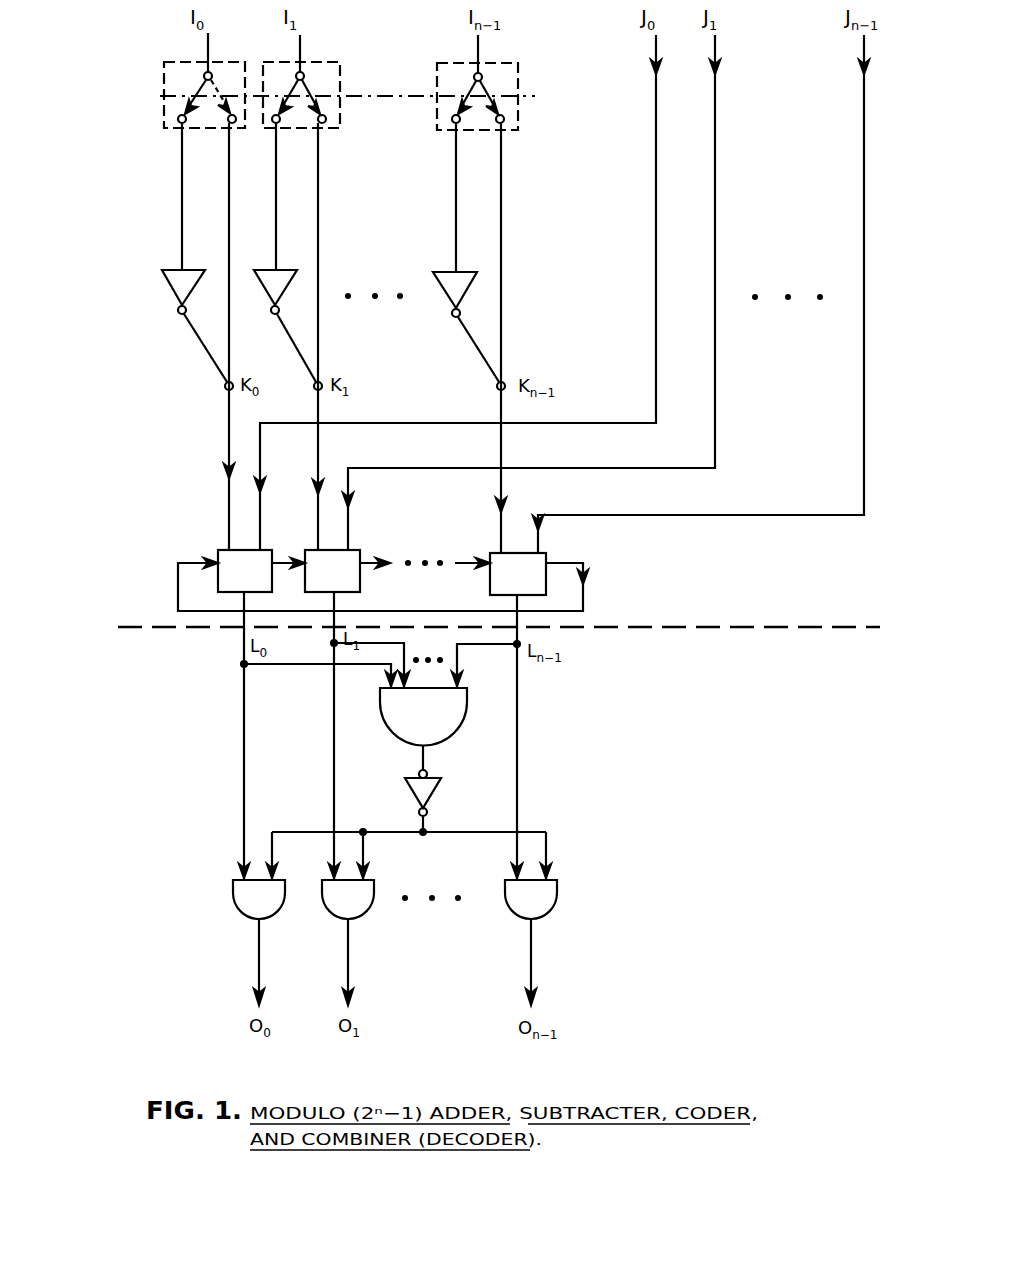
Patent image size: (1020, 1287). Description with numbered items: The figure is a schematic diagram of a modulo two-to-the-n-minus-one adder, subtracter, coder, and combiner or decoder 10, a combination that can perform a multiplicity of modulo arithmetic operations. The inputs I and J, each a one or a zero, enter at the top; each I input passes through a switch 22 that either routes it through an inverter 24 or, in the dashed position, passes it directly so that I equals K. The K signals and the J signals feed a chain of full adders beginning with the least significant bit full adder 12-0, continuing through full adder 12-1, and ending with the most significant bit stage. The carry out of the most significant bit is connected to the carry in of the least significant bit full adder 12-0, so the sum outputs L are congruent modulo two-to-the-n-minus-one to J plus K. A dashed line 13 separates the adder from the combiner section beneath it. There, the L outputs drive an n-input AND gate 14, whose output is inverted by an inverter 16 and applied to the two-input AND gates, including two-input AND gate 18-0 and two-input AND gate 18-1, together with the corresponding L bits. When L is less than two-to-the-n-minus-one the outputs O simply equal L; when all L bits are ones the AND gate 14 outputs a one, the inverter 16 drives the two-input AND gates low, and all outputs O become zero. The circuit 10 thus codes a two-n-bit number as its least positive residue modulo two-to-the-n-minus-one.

The modulo 2^n−1 adder, subtracter, coder, and combiner (decoder) 10 is at (645, 683).
The full adder 12-0 is at (218, 550).
The full adder 12-1 is at (358, 542).
The dashed line 13 is at (685, 627).
The n-input AND gate 14 is at (449, 742).
The inverter 16 is at (440, 794).
The 2-input AND gate 18-0 is at (235, 882).
The 2-input AND gate 18-1 is at (361, 915).
The switches 22 is at (164, 70).
The inverter 24 is at (162, 268).